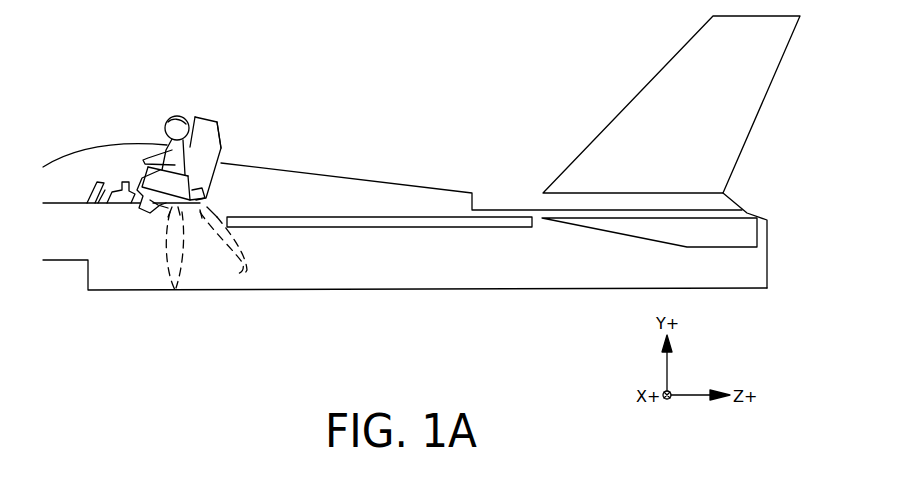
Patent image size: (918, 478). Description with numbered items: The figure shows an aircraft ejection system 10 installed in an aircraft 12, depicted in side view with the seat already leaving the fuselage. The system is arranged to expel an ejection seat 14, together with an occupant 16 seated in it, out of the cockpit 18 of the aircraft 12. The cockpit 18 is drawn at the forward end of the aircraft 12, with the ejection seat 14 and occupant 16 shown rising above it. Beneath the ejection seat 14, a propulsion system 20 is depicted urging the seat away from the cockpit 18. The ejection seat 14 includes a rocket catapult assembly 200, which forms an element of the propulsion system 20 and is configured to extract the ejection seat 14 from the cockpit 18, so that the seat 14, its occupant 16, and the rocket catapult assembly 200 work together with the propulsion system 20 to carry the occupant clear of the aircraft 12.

The aircraft ejection system 10 is at (338, 90).
The aircraft 12 is at (437, 265).
The ejection seat 14 is at (207, 132).
The occupant 16 is at (168, 123).
The cockpit 18 is at (77, 187).
The propulsion system 20 is at (172, 248).
The rocket catapult assembly 200 is at (195, 163).